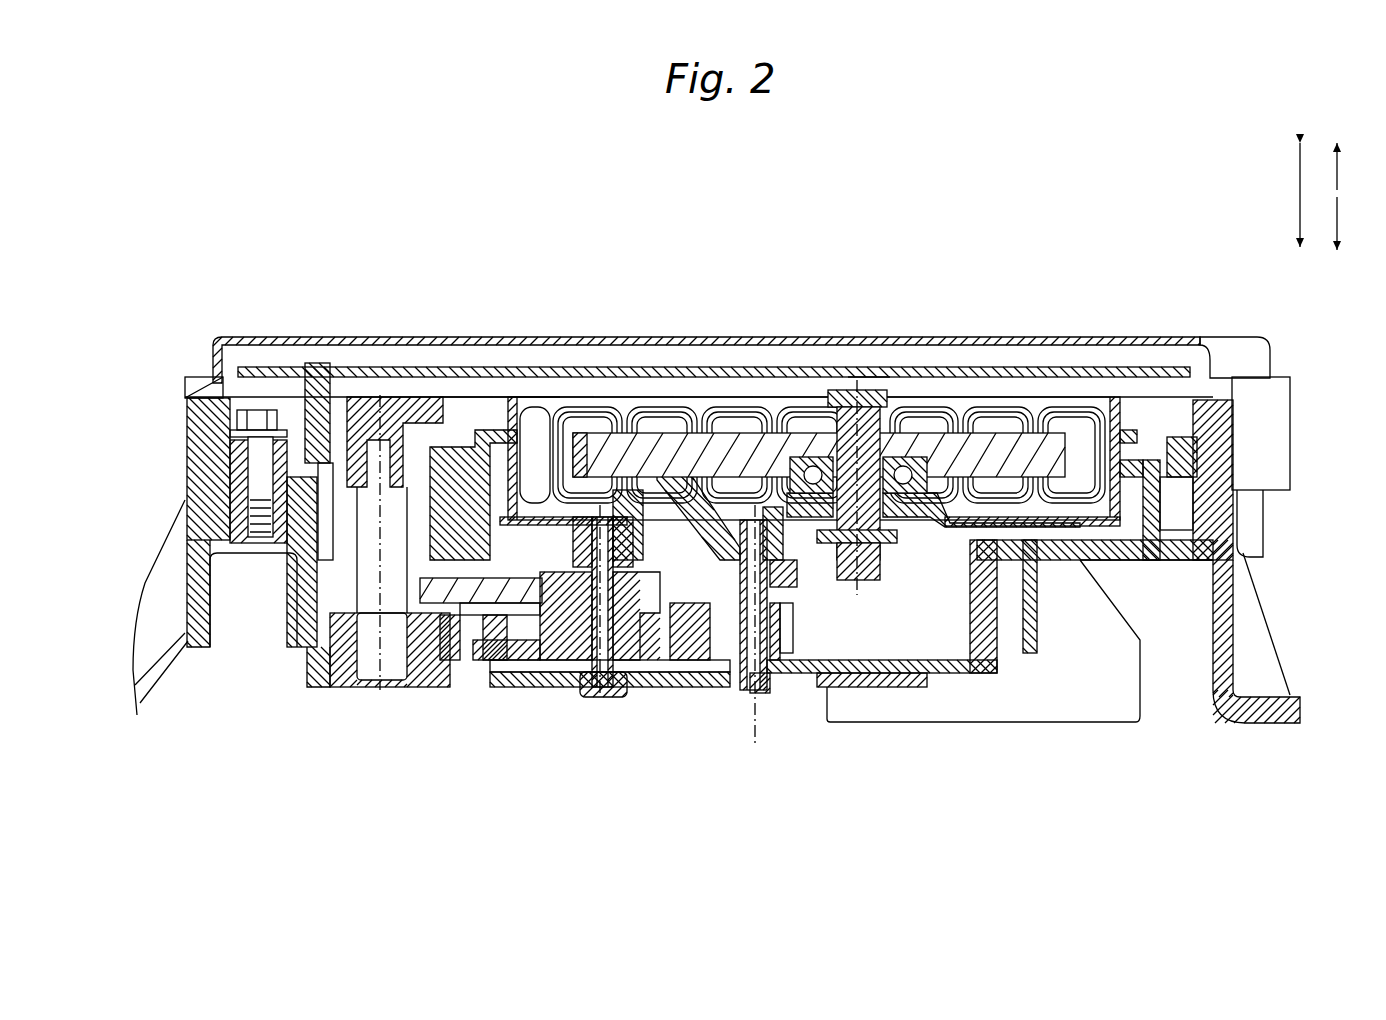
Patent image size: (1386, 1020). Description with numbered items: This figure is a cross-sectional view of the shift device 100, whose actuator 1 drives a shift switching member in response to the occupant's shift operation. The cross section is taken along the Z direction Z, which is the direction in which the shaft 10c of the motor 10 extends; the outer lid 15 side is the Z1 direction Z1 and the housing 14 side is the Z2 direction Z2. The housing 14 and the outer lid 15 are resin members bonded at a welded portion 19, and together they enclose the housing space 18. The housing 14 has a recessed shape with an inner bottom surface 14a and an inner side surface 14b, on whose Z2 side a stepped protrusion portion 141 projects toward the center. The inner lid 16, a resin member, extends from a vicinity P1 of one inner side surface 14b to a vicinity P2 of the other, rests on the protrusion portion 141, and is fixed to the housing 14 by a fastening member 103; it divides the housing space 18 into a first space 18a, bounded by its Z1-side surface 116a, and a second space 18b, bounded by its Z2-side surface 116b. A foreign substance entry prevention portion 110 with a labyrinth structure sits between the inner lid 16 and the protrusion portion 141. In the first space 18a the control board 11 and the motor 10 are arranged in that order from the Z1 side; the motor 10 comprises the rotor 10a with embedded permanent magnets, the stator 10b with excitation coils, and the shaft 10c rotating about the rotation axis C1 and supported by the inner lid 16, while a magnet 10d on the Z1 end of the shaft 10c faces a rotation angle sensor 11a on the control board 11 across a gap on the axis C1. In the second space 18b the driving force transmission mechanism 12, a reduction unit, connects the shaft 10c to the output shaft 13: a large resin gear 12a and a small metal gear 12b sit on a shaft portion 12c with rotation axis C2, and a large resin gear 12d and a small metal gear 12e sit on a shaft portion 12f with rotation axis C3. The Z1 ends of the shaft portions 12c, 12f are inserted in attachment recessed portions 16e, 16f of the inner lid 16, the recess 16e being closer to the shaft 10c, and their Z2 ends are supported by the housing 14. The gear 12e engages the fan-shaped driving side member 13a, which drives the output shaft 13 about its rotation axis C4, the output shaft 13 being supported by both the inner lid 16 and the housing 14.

The motor device 100 is at (95, 195).
The actuator 1 is at (155, 372).
The vicinity of one inner side surface P1 is at (235, 440).
The vicinity of the other inner side surface P2 is at (1197, 437).
The fastening member 103 is at (262, 408).
The output shaft 13 is at (380, 393).
The driving side member 13a is at (462, 667).
The rotation axis C4 is at (380, 692).
The outer lid 15 is at (687, 337).
The control board 11 is at (790, 365).
The rotation angle sensor 11a is at (873, 378).
The housing space 18 is at (470, 393).
The first space 18a is at (512, 352).
The second space 18b is at (937, 650).
The motor 10 is at (993, 395).
The rotor 10a is at (645, 432).
The stator 10b is at (577, 440).
The shaft 10c is at (880, 545).
The magnet 10d is at (838, 390).
The rotation axis C1 is at (857, 388).
The inner lid 16 is at (1178, 435).
The attachment recessed portion 16e is at (745, 538).
The attachment recessed portion 16f is at (588, 553).
The driving force transmission mechanism 12 is at (808, 646).
The gear 12a is at (817, 584).
The gear 12b is at (790, 618).
The shaft portion 12c is at (765, 692).
The gear 12d is at (676, 662).
The gear 12e is at (540, 575).
The shaft portion 12f is at (604, 692).
The rotation axis C2 is at (758, 697).
The rotation axis C3 is at (602, 698).
The housing 14 is at (737, 692).
The inner bottom surface 14a is at (901, 672).
The inner side surface 14b is at (1187, 503).
The protrusion portion 141 is at (975, 600).
The surface of the inner lid on the Z1 direction side 116a is at (1150, 530).
The surface of the inner lid on the Z2 direction side 116b is at (1100, 535).
The welded portion 19 is at (1238, 395).
The foreign substance entry prevention portion 110 is at (1225, 470).
The Z direction Z is at (1309, 195).
The Z1 direction Z1 is at (1353, 166).
The Z2 direction Z2 is at (1353, 223).